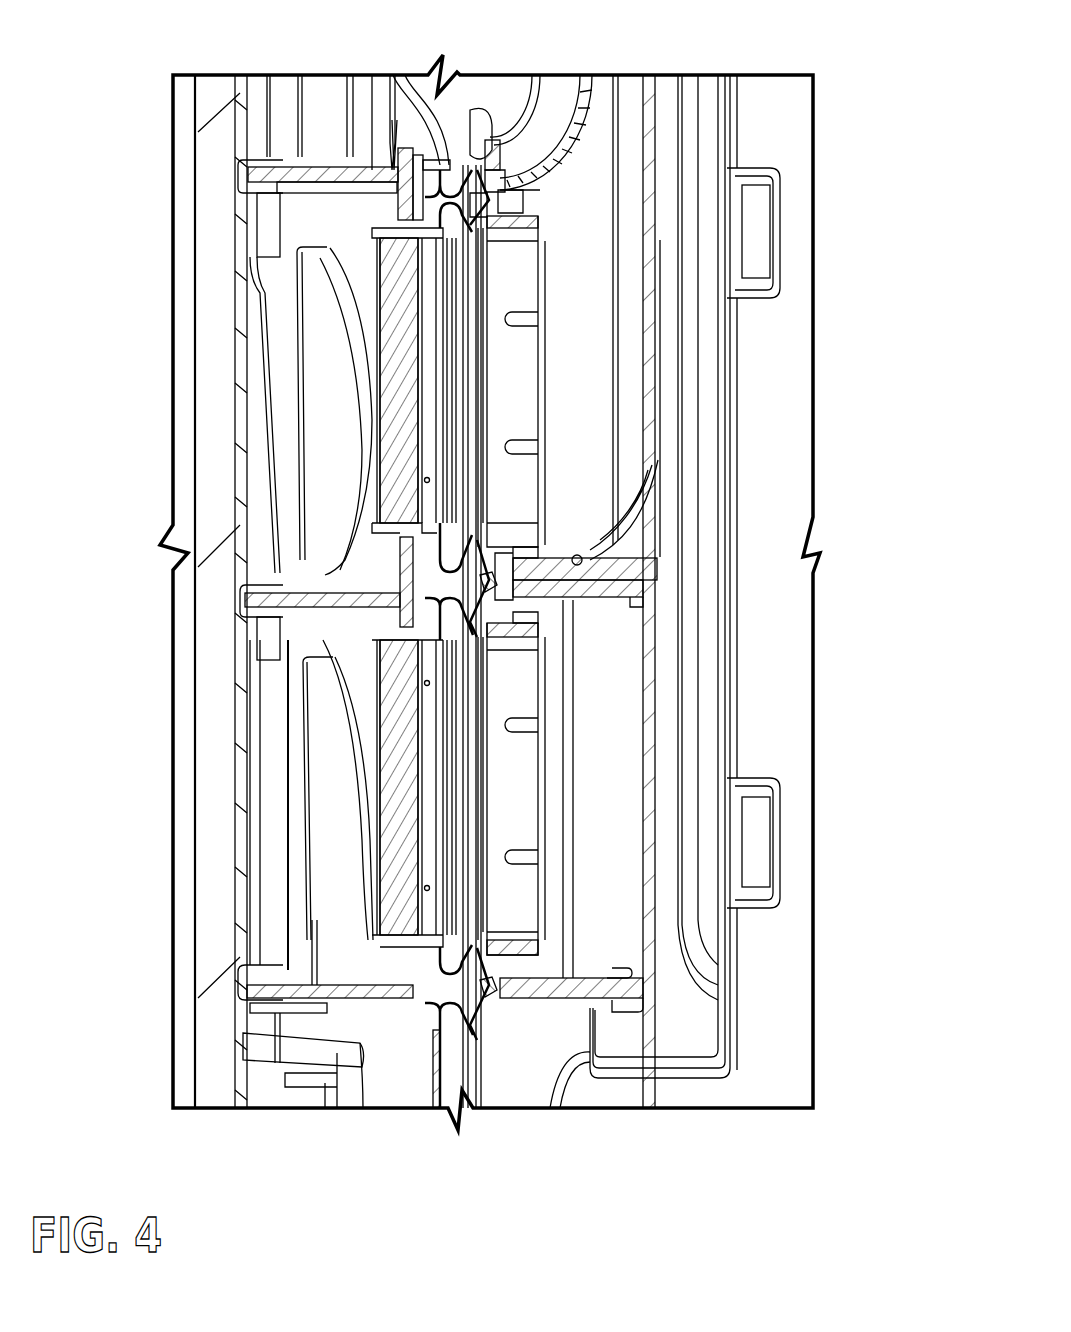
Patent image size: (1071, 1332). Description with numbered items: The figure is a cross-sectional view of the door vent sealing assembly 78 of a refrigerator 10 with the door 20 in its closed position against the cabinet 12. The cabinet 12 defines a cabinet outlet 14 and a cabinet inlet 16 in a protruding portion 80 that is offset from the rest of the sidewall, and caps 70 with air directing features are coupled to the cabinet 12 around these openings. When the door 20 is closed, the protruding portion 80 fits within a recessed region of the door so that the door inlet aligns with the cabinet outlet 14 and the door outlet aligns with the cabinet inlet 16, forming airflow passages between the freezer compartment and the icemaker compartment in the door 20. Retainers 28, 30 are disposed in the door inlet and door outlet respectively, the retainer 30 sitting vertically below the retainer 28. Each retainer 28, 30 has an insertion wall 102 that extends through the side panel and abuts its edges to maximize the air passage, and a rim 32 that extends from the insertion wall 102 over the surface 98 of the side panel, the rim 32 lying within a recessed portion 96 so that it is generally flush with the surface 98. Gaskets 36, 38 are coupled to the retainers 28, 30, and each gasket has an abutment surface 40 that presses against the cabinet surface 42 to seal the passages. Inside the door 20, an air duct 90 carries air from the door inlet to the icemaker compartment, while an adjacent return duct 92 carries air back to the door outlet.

The refrigerator 10 is at (843, 66).
The cabinet 12 is at (190, 157).
The cabinet outlet 14 is at (395, 425).
The cabinet inlet 16 is at (400, 763).
The door 20 is at (775, 132).
The retainer 28 is at (518, 265).
The retainer 30 is at (514, 685).
The rim 32 is at (580, 560).
The gasket 36 is at (455, 350).
The gasket 38 is at (450, 860).
The abutment surface 40 is at (445, 383).
The cabinet surface 42 is at (436, 150).
The cap 70 is at (395, 215).
The door vent sealing assembly 78 is at (563, 395).
The protruding portion 80 is at (472, 108).
The air duct 90 is at (650, 439).
The return duct 92 is at (648, 978).
The recessed portion 96 is at (500, 600).
The surface 98 is at (492, 138).
The insertion wall 102 is at (478, 355).